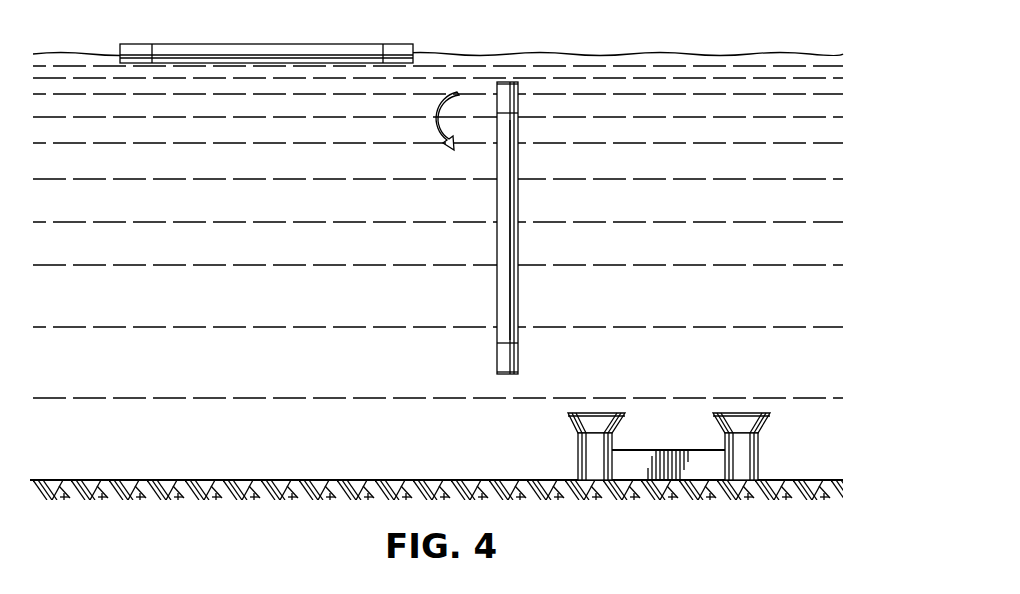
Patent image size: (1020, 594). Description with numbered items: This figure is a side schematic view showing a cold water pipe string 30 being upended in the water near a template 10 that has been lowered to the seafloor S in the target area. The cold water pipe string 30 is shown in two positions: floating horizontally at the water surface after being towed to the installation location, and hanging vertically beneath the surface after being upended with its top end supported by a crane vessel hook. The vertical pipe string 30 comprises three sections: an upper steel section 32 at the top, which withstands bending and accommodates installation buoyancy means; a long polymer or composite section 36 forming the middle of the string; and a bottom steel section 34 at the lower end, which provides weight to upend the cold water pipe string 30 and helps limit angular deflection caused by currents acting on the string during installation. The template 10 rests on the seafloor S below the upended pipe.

The cold water pipe string 30 is at (292, 45).
The upper steel section 32 is at (519, 97).
The bottom steel section 34 is at (497, 355).
The polymer or composite section 36 is at (497, 207).
The template 10 is at (759, 465).
The seafloor S is at (362, 479).